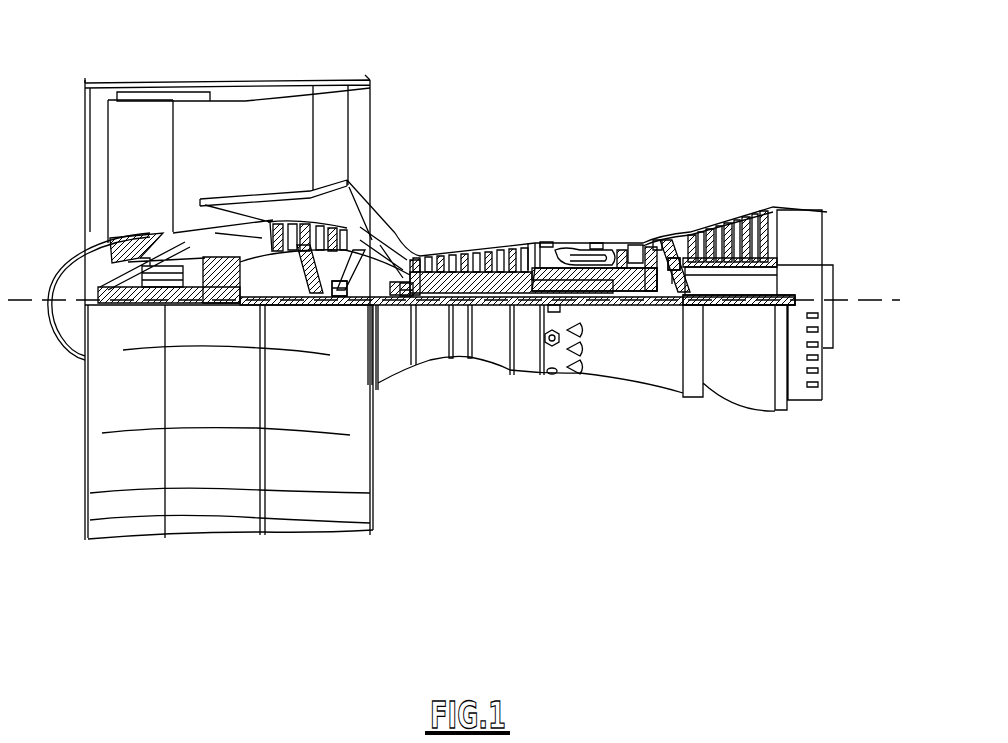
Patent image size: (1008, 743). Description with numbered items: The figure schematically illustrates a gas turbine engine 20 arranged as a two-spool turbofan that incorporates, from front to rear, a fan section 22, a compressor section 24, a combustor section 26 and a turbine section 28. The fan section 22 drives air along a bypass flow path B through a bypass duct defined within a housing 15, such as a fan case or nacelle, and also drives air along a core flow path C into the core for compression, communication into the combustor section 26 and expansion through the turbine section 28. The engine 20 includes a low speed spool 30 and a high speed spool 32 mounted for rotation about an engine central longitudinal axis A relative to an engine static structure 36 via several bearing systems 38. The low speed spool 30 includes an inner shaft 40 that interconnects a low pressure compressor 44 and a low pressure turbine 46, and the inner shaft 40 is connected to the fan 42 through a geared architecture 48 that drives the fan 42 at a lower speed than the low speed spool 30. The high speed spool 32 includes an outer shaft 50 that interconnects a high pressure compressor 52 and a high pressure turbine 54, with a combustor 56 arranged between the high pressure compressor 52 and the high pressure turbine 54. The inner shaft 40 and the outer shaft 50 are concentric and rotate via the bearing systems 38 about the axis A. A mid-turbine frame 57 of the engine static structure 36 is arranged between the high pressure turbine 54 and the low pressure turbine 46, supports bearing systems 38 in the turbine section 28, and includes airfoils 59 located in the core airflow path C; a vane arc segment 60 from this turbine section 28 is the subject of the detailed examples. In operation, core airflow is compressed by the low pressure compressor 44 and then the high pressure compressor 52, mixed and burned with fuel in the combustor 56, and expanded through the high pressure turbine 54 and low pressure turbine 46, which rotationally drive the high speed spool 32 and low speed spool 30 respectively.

The gas turbine engine 20 is at (594, 120).
The fan section 22 is at (175, 76).
The housing 15 is at (232, 88).
The fan 42 is at (159, 186).
The low pressure compressor 44 is at (318, 230).
The compressor section 24 is at (409, 226).
The high pressure compressor 52 is at (477, 258).
The high speed spool 32 is at (526, 262).
The combustor section 26 is at (582, 218).
The combustor 56 is at (589, 261).
The high pressure turbine 54 is at (637, 243).
The mid-turbine frame 57 is at (669, 240).
The vane arc segment 60 is at (666, 238).
The turbine section 28 is at (714, 180).
The low pressure turbine 46 is at (729, 212).
The airfoils 59 is at (690, 276).
The bearing systems 38 is at (334, 292).
The outer shaft 50 is at (578, 300).
The geared architecture 48 is at (231, 292).
The inner shaft 40 is at (388, 308).
The low speed spool 30 is at (492, 316).
The engine static structure 36 is at (524, 380).
The engine central longitudinal axis A is at (897, 300).
The bypass flow path B is at (195, 143).
The core flow path C is at (218, 225).